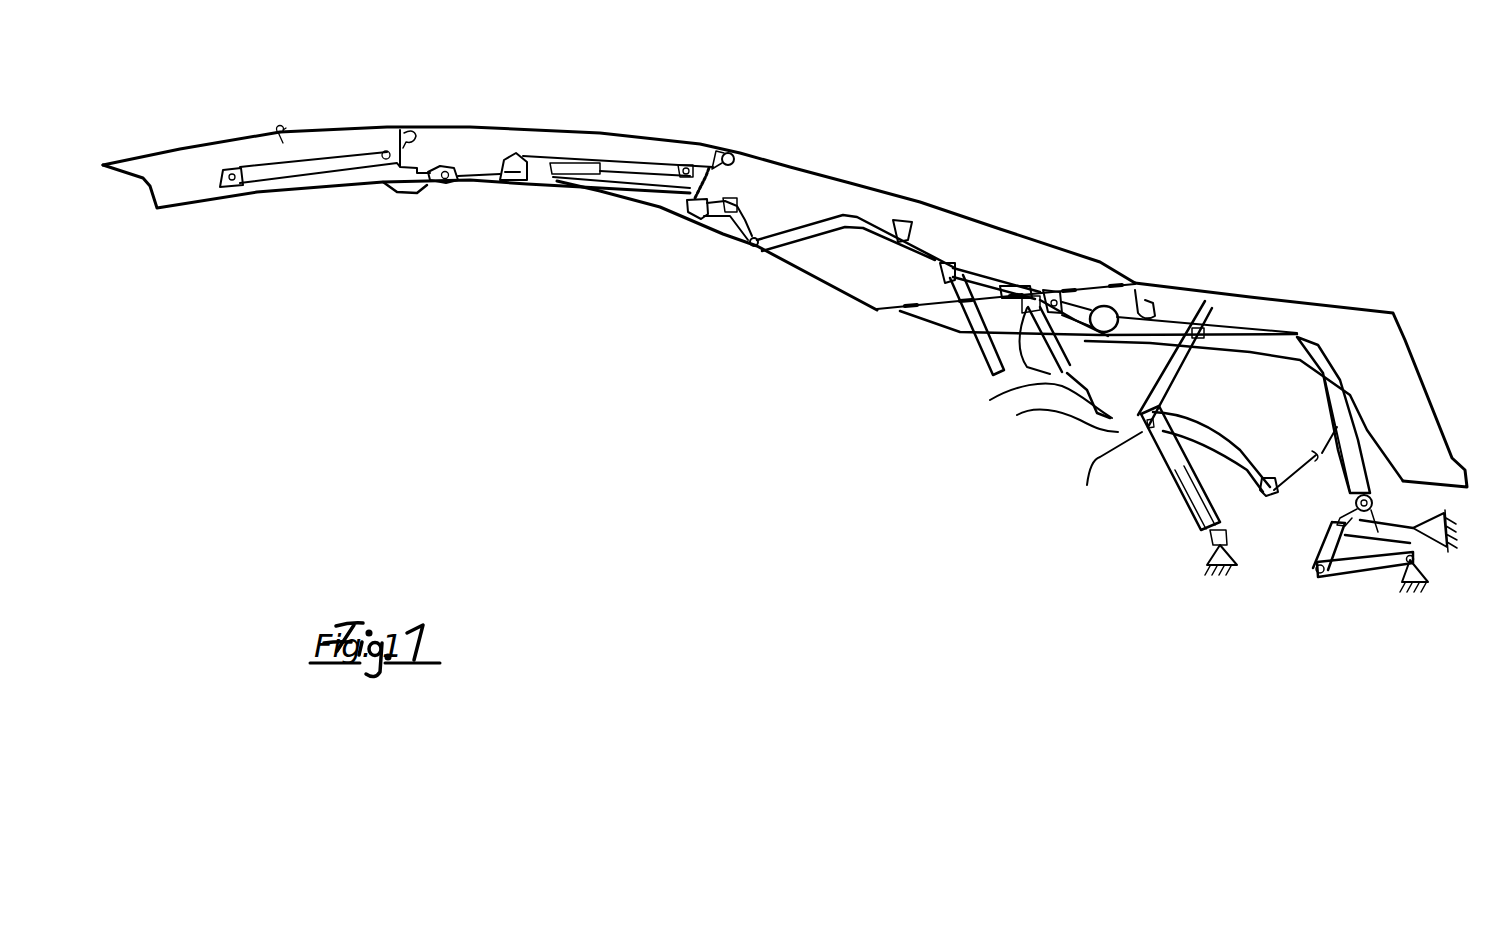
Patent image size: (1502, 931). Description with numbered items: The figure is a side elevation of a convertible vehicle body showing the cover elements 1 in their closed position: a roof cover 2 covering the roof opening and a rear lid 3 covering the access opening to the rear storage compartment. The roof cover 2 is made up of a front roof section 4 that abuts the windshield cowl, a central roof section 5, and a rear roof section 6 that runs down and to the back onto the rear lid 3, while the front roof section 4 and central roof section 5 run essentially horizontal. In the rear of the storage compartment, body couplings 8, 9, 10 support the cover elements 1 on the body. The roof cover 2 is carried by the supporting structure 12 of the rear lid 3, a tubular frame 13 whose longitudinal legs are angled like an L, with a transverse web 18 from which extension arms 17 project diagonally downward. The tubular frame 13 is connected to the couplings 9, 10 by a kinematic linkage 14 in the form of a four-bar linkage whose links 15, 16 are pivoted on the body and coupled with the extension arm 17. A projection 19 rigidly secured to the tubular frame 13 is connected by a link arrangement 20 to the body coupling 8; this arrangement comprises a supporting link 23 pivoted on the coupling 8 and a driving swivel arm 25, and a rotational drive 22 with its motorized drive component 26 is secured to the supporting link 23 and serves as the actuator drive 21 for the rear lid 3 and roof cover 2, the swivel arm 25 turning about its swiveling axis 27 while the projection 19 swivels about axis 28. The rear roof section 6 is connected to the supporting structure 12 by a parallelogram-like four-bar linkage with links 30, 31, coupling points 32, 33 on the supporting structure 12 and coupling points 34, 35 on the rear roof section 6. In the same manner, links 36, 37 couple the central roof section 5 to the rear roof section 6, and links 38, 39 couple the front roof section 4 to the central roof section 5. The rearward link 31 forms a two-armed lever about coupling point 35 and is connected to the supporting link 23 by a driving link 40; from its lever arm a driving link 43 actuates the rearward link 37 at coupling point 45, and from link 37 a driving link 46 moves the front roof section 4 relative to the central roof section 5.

The cover elements 1 is at (1210, 170).
The roof cover 2 is at (668, 120).
The rear lid 3 is at (1336, 300).
The front roof section 4 is at (274, 125).
The central roof section 5 is at (523, 132).
The rear roof section 6 is at (862, 203).
The body coupling 8 is at (1210, 562).
The body coupling 9 is at (1353, 578).
The body coupling 10 is at (1433, 548).
The supporting structure 12 is at (1370, 330).
The tubular frame 13 is at (1354, 420).
The kinematic linkage 14 is at (1353, 592).
The link 15 is at (1325, 582).
The link 16 is at (1370, 532).
The extension arm 17 is at (1327, 540).
The transverse web 18 is at (1356, 503).
The projection 19 is at (1313, 452).
The link arrangement 20 is at (1189, 496).
The actuator drive 21 is at (1175, 410).
The rotational drive 22 is at (1133, 440).
The supporting link 23 is at (1211, 464).
The driving swivel arm 25 is at (1203, 430).
The motorized drive component 26 is at (1178, 502).
The swiveling axis 27 is at (1103, 479).
The swiveling axis 28 is at (1272, 478).
The link 30 is at (993, 282).
The link 31 is at (1162, 368).
The coupling point 32 is at (1060, 286).
The coupling point 33 is at (1205, 301).
The coupling point 34 is at (954, 270).
The coupling point 35 is at (1010, 405).
The link 36 is at (625, 164).
The link 37 is at (753, 248).
The link 38 is at (328, 162).
The link 39 is at (457, 186).
The driving link 40 is at (1045, 435).
The driving link 43 is at (963, 333).
The coupling point 45 is at (847, 223).
The driving link 46 is at (620, 197).